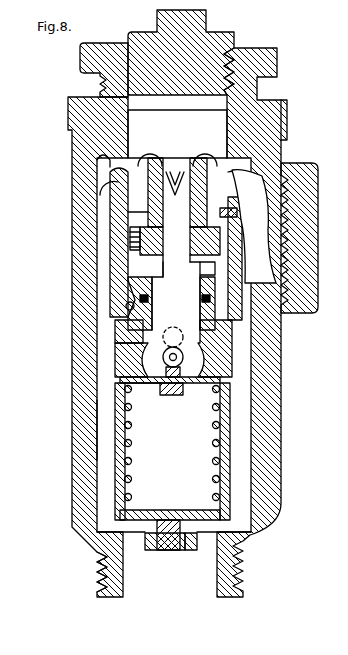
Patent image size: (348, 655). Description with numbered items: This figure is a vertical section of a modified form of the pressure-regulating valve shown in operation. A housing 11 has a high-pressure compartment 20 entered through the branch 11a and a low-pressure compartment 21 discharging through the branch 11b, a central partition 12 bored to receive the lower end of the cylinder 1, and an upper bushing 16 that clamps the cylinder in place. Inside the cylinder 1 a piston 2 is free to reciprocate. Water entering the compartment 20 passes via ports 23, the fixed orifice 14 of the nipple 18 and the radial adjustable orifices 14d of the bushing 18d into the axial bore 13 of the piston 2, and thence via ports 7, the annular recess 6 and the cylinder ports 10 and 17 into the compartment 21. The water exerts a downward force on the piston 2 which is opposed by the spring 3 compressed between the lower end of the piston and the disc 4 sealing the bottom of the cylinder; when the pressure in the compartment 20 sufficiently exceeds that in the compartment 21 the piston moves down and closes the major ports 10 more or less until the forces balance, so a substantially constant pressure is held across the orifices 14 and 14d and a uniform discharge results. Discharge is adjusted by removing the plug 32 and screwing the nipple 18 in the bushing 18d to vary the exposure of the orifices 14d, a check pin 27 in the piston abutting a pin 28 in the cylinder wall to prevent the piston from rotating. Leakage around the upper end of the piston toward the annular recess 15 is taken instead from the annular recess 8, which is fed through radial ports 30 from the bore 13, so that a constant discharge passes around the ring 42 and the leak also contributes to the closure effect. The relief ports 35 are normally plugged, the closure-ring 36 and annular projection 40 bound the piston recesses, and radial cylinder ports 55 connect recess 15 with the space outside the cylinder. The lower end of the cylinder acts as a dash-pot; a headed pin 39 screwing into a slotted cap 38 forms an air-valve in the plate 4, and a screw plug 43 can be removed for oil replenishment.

The cylinder 1 is at (230, 403).
The piston 2 is at (140, 287).
The spring 3 is at (130, 445).
The disc 4 is at (190, 513).
The annular recess 6 is at (133, 367).
The ports 7 is at (202, 362).
The annular recess 8 is at (220, 267).
The major ports 10 is at (118, 330).
The housing 11 is at (110, 157).
The branch 11a is at (296, 157).
The branch 11b is at (110, 578).
The central partition 12 is at (110, 305).
The axial bore 13 is at (176, 296).
The fixed orifice 14 is at (175, 204).
The radial adjustable orifices 14d is at (128, 212).
The annular recess 15 is at (220, 307).
The bushing 16 is at (83, 56).
The minor ports 17 is at (160, 382).
The nipple 18 is at (171, 176).
The bushing 18d is at (118, 182).
The compartment 20 is at (103, 222).
The compartment 21 is at (100, 427).
The ports 23 is at (235, 178).
The check pin 27 is at (133, 232).
The pin 28 is at (237, 212).
The radial ports 30 is at (203, 268).
The plug 32 is at (224, 37).
The relief ports 35 is at (148, 297).
The closure-ring 36 is at (232, 333).
The cap 38 is at (188, 551).
The headed pin 39 is at (163, 551).
The annular projection 40 is at (225, 380).
The ring 42 is at (229, 237).
The screw plug 43 is at (173, 397).
The radial cylinder ports 55 is at (117, 293).